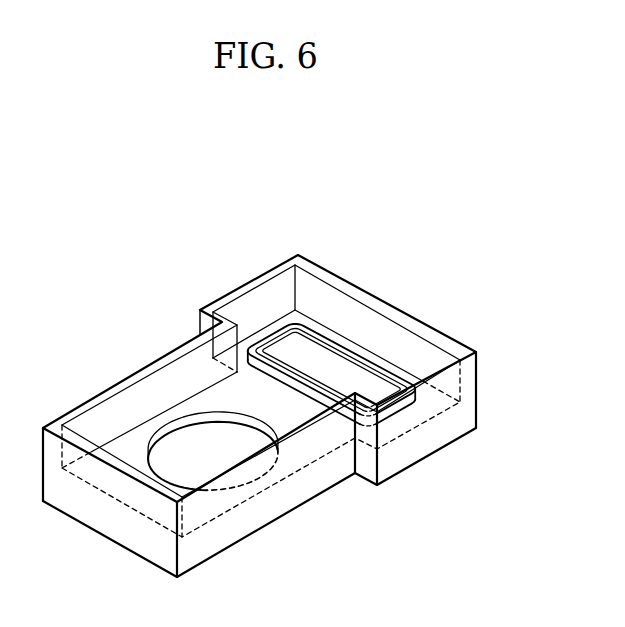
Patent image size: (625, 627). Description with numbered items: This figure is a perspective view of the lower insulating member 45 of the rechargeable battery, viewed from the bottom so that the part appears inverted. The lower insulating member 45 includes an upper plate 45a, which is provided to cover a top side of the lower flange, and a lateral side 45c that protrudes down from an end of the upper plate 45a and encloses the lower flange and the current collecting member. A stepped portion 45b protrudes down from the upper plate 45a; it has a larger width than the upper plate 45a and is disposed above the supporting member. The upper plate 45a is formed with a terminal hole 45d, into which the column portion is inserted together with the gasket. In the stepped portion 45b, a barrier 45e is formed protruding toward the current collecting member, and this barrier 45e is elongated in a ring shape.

The lower insulating member 45 is at (254, 259).
The upper plate 45a is at (124, 445).
The stepped portion 45b is at (301, 316).
The lateral side 45c is at (245, 518).
The terminal hole 45d is at (177, 422).
The barrier 45e is at (376, 370).